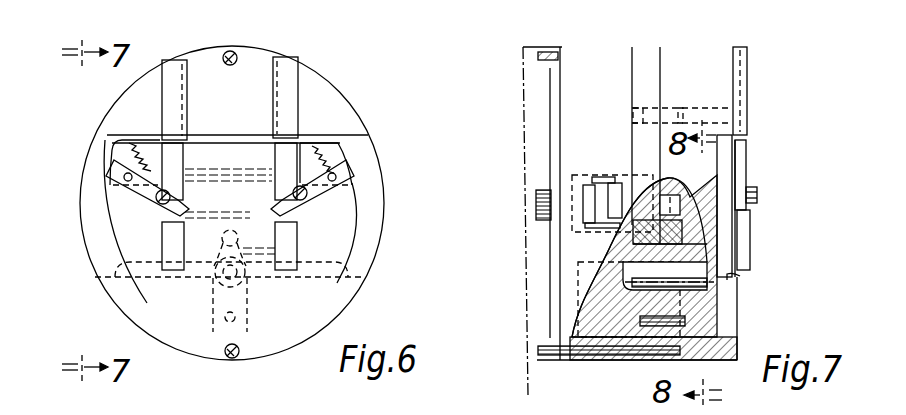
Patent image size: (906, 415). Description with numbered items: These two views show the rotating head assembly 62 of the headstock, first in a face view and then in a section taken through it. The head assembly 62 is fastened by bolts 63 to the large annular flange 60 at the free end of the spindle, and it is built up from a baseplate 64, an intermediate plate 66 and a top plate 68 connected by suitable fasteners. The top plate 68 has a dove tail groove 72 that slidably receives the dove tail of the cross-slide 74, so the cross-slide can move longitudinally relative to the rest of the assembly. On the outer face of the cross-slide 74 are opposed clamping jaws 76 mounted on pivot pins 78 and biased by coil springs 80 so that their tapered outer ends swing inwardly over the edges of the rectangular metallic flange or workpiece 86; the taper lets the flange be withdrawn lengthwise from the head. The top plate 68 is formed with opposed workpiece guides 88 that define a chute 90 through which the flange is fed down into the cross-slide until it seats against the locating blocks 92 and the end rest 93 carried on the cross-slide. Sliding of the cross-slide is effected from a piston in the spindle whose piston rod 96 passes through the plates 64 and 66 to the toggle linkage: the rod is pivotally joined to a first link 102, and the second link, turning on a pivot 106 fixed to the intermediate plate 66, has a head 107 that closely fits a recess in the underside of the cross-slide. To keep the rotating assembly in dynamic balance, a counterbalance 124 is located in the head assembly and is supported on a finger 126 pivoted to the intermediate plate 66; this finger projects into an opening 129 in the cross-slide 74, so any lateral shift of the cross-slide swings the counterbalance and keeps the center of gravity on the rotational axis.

In FIG. 7, the annular flange 60 is at (537, 84).
In FIG. 6, the head assembly 62 is at (352, 90).
In FIG. 7, the head assembly 62 is at (545, 367).
In FIG. 6, the bolts 63 is at (222, 55).
In FIG. 7, the bolts 63 is at (595, 357).
In FIG. 7, the baseplate 64 is at (562, 110).
In FIG. 7, the intermediate plate 66 is at (647, 88).
In FIG. 7, the top plate 68 is at (718, 84).
In FIG. 7, the dove tail groove 72 is at (665, 177).
In FIG. 6, the cross-slide 74 is at (352, 223).
In FIG. 7, the cross-slide 74 is at (712, 223).
In FIG. 6, the clamping jaws 76 is at (142, 198).
In FIG. 7, the clamping jaws 76 is at (742, 152).
In FIG. 6, the pivot pins 78 is at (152, 206).
In FIG. 7, the pivot pins 78 is at (757, 193).
In FIG. 6, the coil springs 80 is at (132, 147).
In FIG. 6, the workpiece 86 is at (235, 159).
In FIG. 6, the workpiece guides 88 is at (178, 88).
In FIG. 7, the workpiece guides 88 is at (738, 112).
In FIG. 6, the chute 90 is at (244, 73).
In FIG. 6, the locating blocks 92 is at (170, 268).
In FIG. 7, the locating blocks 92 is at (742, 245).
In FIG. 6, the end rest 93 is at (352, 274).
In FIG. 7, the end rest 93 is at (728, 275).
In FIG. 7, the piston rod 96 is at (538, 193).
In FIG. 7, the first link 102 is at (624, 288).
In FIG. 7, the pivot 106 is at (607, 173).
In FIG. 7, the head 107 is at (681, 198).
In FIG. 7, the counterbalance 124 is at (580, 325).
In FIG. 6, the finger 126 is at (252, 273).
In FIG. 7, the finger 126 is at (703, 303).
In FIG. 6, the opening 129 is at (344, 406).